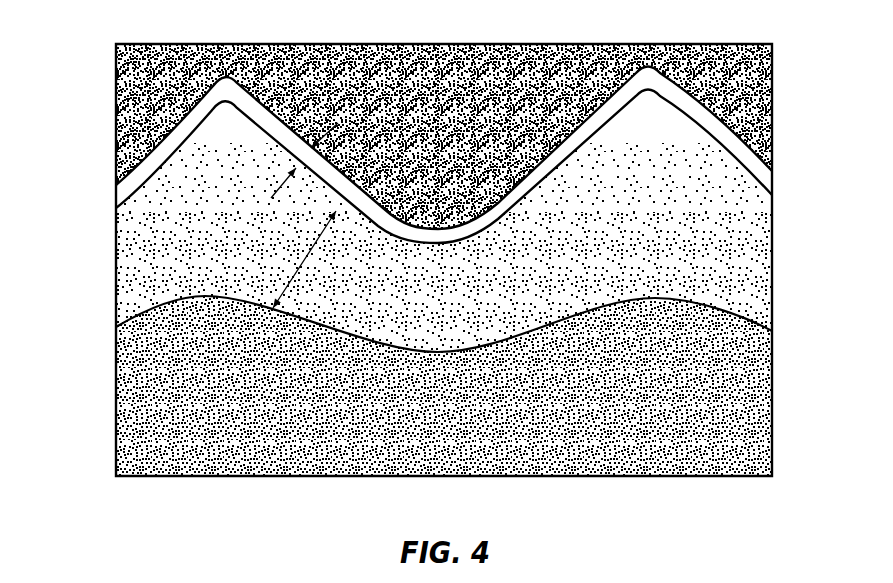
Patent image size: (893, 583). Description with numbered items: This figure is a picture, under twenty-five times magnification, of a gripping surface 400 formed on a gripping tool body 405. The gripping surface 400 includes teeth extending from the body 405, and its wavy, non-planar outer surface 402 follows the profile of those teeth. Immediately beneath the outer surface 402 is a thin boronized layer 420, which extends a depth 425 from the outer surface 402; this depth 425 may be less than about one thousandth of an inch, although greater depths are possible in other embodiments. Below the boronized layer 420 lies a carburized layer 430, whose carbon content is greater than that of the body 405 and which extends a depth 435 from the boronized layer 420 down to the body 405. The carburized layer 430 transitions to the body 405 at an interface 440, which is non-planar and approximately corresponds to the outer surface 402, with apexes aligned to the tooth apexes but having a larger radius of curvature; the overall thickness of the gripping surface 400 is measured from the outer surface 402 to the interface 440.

The gripping surface 400 is at (97, 79).
The outer surface 402 is at (288, 76).
The gripping tool body 405 is at (97, 328).
The boronized layer 420 is at (731, 134).
The depth 425 is at (357, 138).
The carburized layer 430 is at (720, 243).
The depth 435 is at (297, 243).
The interface 440 is at (718, 302).